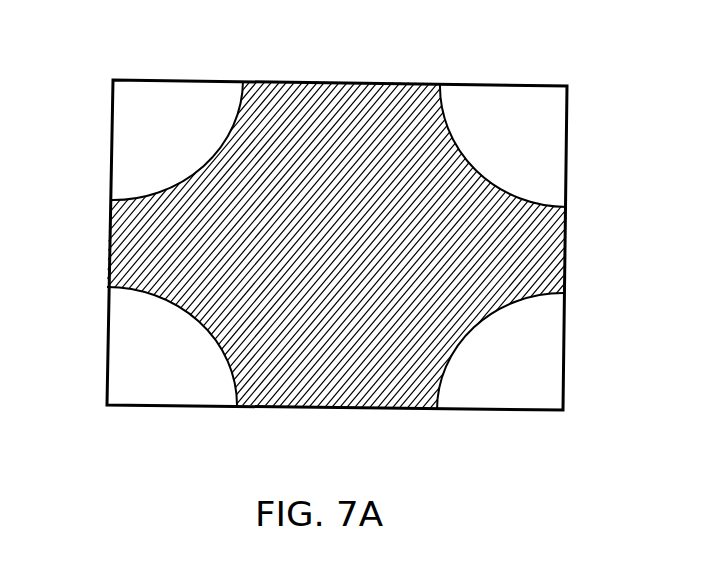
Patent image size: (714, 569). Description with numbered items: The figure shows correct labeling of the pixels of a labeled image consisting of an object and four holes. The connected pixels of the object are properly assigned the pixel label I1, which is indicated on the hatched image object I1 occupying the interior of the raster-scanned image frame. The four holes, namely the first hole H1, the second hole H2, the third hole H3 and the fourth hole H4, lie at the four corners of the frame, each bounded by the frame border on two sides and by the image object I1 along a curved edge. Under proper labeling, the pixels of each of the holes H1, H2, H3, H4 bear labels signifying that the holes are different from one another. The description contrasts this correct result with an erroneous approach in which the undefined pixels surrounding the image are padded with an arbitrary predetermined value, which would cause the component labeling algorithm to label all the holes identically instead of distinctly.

The hole 1 H1 is at (166, 93).
The hole 2 H2 is at (507, 100).
The hole 3 H3 is at (491, 398).
The hole 4 H4 is at (181, 392).
The image object I1 is at (337, 245).